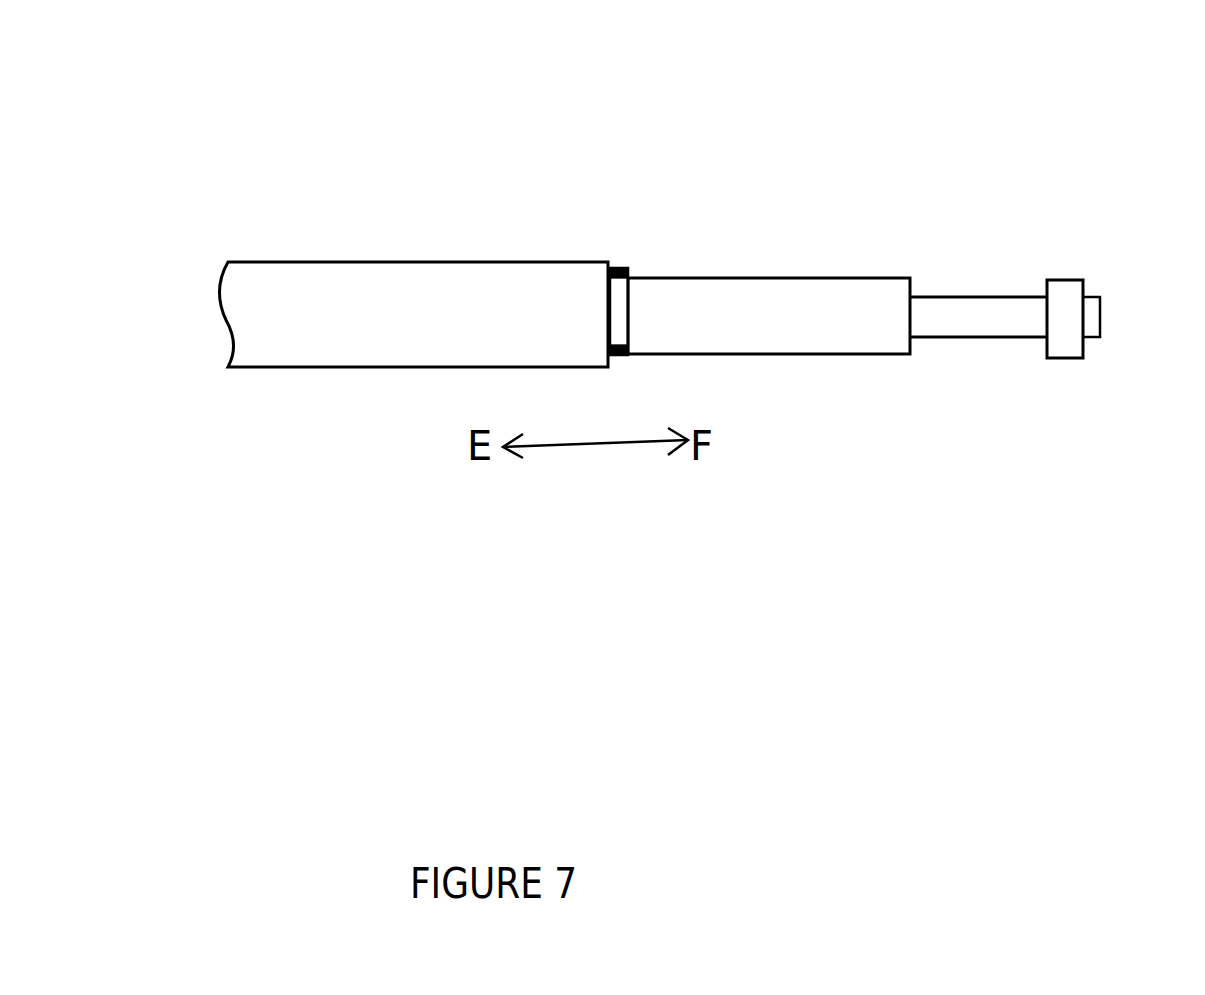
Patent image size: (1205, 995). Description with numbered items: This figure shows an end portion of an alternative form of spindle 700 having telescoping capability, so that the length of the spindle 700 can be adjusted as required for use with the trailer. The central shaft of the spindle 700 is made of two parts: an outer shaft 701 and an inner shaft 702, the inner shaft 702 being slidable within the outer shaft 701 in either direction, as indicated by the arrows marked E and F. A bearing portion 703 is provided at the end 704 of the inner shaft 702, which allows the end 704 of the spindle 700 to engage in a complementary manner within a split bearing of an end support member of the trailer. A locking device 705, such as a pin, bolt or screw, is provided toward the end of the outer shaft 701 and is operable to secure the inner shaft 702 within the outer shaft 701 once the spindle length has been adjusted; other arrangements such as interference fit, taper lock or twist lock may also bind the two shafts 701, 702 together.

The spindle 700 is at (650, 123).
The outer shaft 701 is at (375, 335).
The inner shaft 702 is at (795, 333).
The bearing portion 703 is at (1060, 337).
The end 704 is at (1068, 225).
The locking device 705 is at (628, 268).